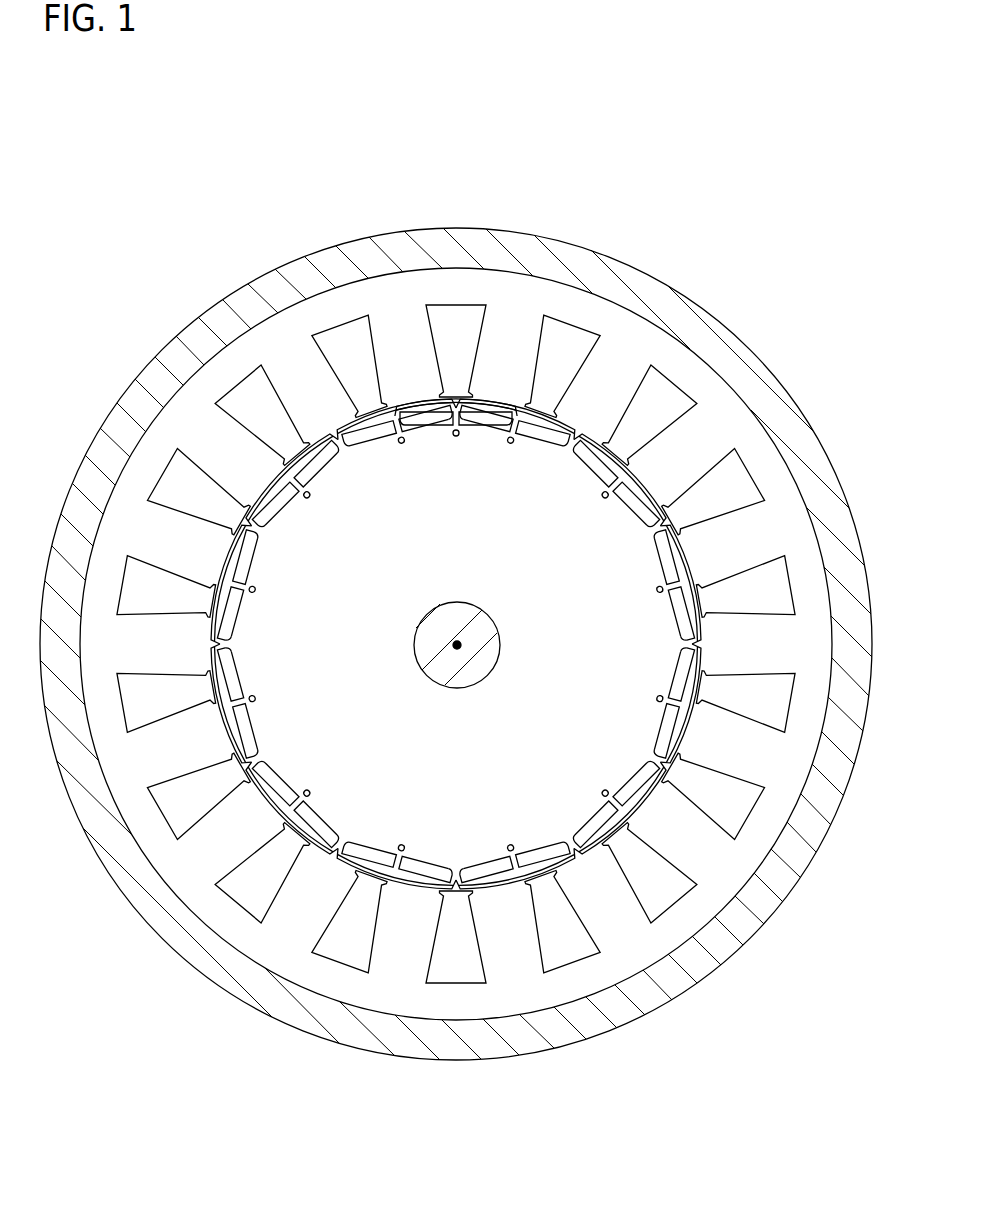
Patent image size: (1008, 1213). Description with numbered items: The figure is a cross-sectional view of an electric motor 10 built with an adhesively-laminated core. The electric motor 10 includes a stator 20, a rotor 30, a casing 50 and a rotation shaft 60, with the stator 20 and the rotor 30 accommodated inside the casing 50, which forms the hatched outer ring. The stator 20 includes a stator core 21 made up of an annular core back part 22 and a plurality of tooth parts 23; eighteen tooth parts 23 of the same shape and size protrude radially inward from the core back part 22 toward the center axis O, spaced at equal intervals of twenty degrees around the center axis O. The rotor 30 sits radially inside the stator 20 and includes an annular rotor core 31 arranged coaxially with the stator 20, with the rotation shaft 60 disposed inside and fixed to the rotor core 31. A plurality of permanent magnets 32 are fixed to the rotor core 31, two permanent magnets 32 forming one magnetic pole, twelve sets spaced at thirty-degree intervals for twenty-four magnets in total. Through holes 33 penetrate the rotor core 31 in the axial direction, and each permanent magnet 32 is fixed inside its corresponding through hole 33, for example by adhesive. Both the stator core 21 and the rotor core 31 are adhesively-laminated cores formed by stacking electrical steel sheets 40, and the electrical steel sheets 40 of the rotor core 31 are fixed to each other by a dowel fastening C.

The electric motor 10 is at (760, 130).
The stator 20 is at (752, 388).
The stator core 21 is at (682, 192).
The core back part 22 is at (648, 330).
The tooth parts 23 is at (602, 362).
The rotor 30 is at (403, 650).
The rotor core 31 is at (355, 830).
The permanent magnets 32 is at (547, 440).
The through holes 33 is at (487, 872).
The electrical steel sheets 40 is at (240, 355).
The casing 50 is at (800, 433).
The rotation shaft 60 is at (488, 660).
The fastening C is at (308, 494).
The center axis O is at (460, 644).